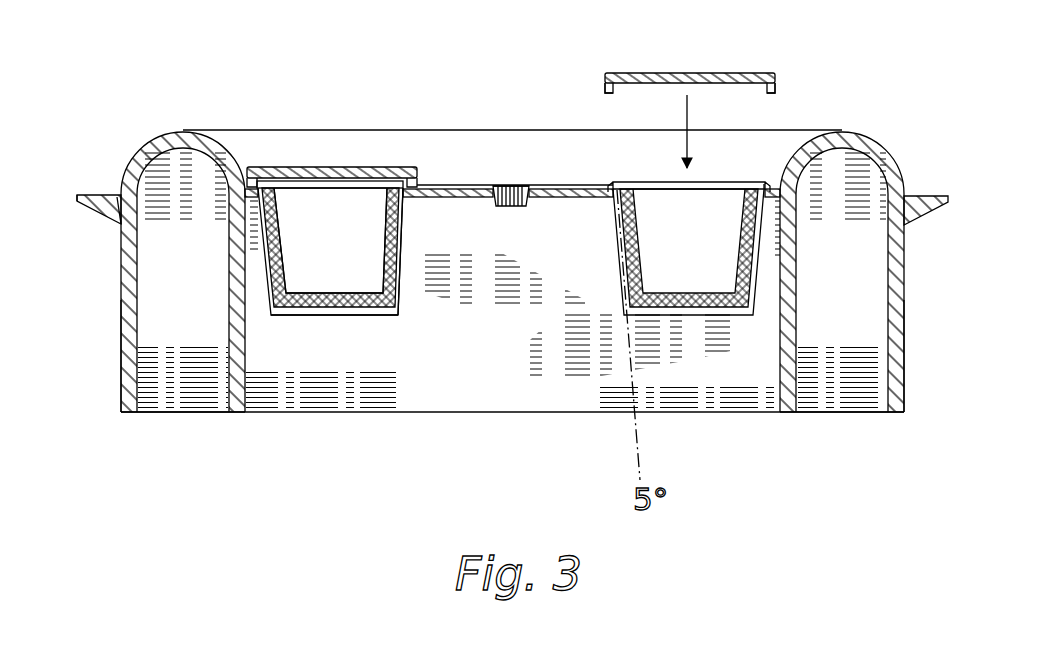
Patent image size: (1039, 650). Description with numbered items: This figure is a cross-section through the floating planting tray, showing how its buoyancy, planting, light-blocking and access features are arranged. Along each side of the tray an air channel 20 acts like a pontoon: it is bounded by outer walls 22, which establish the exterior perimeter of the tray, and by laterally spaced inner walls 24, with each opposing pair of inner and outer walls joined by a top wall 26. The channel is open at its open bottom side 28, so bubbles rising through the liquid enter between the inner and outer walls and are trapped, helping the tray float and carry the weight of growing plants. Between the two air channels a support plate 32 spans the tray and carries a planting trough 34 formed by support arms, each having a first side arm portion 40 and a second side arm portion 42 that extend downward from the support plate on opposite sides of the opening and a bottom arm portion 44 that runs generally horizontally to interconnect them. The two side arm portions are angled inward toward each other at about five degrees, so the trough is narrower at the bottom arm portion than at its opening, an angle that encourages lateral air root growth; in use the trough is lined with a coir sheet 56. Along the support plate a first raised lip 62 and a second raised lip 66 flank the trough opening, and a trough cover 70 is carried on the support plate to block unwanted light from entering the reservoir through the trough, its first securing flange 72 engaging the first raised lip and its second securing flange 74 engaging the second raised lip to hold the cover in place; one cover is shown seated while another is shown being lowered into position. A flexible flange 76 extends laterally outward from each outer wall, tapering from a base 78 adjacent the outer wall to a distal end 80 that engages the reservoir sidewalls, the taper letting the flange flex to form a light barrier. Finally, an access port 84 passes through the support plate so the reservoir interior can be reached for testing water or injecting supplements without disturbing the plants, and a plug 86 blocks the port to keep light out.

The air channel 20 is at (182, 323).
The outer walls 22 is at (123, 353).
The inner walls 24 is at (245, 388).
The top wall 26 is at (183, 131).
The open bottom side 28 is at (163, 417).
The support plate 32 is at (568, 185).
The planting trough 34 is at (331, 219).
The first side arm portion 40 is at (265, 283).
The second side arm portion 42 is at (405, 220).
The bottom arm portion 44 is at (392, 317).
The coir sheet 56 is at (383, 181).
The first raised lip 62 is at (770, 183).
The second raised lip 66 is at (612, 184).
The trough cover 70 is at (278, 167).
The first securing flange 72 is at (777, 85).
The second securing flange 74 is at (605, 83).
The flexible flange 76 is at (92, 195).
The base 78 is at (121, 195).
The distal end 80 is at (77, 196).
The access port 84 is at (490, 185).
The plug 86 is at (507, 185).